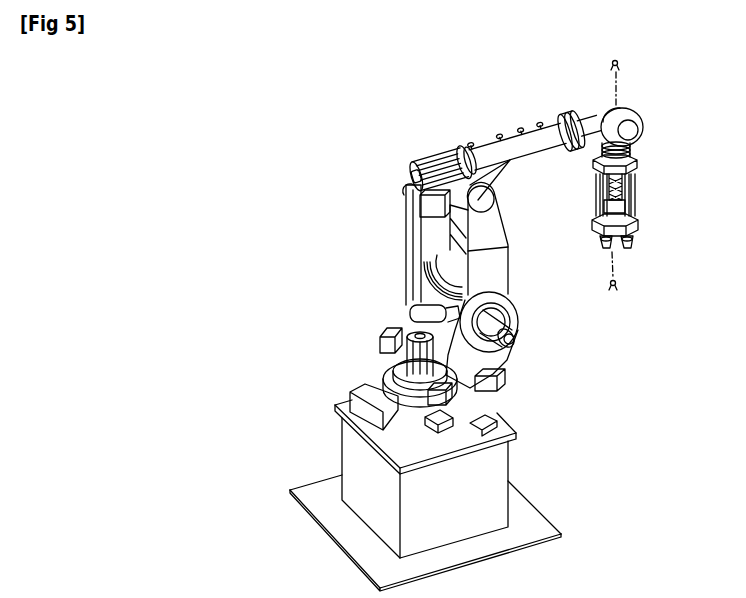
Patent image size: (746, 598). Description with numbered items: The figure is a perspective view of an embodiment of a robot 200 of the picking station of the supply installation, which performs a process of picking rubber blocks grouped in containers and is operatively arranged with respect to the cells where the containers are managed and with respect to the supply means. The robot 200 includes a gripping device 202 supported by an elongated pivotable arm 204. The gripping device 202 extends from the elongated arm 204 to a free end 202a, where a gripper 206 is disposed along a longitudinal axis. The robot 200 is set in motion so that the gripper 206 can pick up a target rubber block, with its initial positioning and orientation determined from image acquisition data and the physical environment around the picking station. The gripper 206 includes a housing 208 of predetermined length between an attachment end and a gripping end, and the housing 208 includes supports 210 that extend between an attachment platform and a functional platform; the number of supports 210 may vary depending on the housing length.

The robot 200 is at (393, 135).
The gripping device 202 is at (535, 150).
The free end 202a is at (587, 115).
The elongated pivotable arm 204 is at (493, 268).
The gripper 206 is at (635, 178).
The housing 208 is at (629, 246).
The supports 210 is at (638, 216).